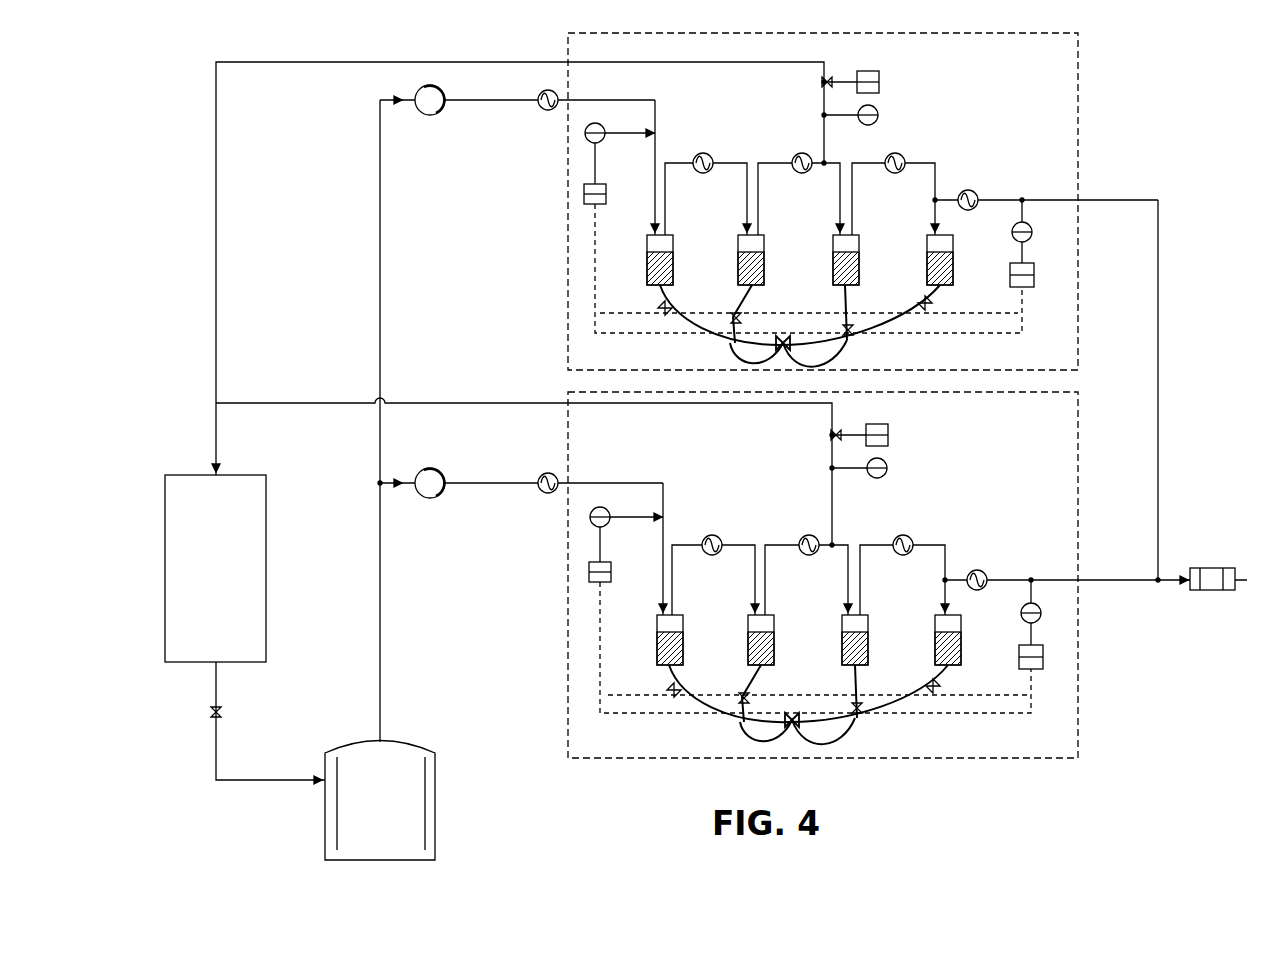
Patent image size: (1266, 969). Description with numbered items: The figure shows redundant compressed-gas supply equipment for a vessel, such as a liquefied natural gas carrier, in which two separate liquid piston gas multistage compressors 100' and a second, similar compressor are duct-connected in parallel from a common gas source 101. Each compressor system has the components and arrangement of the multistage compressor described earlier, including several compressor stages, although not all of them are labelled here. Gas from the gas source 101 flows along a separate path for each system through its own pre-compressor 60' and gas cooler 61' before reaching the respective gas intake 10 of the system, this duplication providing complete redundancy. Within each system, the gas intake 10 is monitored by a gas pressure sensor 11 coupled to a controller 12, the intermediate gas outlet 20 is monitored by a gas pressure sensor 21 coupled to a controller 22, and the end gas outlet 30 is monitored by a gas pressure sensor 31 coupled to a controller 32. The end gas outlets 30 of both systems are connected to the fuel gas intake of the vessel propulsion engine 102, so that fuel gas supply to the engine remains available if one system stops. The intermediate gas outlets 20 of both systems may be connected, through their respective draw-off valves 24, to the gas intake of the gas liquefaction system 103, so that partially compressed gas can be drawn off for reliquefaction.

The gas intake 10 is at (658, 112).
The gas pressure sensor 11 is at (603, 142).
The controller 12 is at (597, 205).
The intermediate gas outlet 20 is at (714, 62).
The gas pressure sensor 21 is at (878, 110).
The controller 22 is at (880, 78).
The draw-off valve 24 is at (822, 82).
The end gas outlet 30 is at (1036, 198).
The gas pressure sensor 31 is at (1010, 237).
The controller 32 is at (1030, 288).
The pre-compressor 60' is at (422, 127).
The gas cooler 61' is at (550, 127).
The liquid piston gas multistage compressor 100' is at (862, 201).
The gas source 101 is at (350, 745).
The propulsion engine 102 is at (1212, 568).
The gas liquefaction system 103 is at (165, 520).